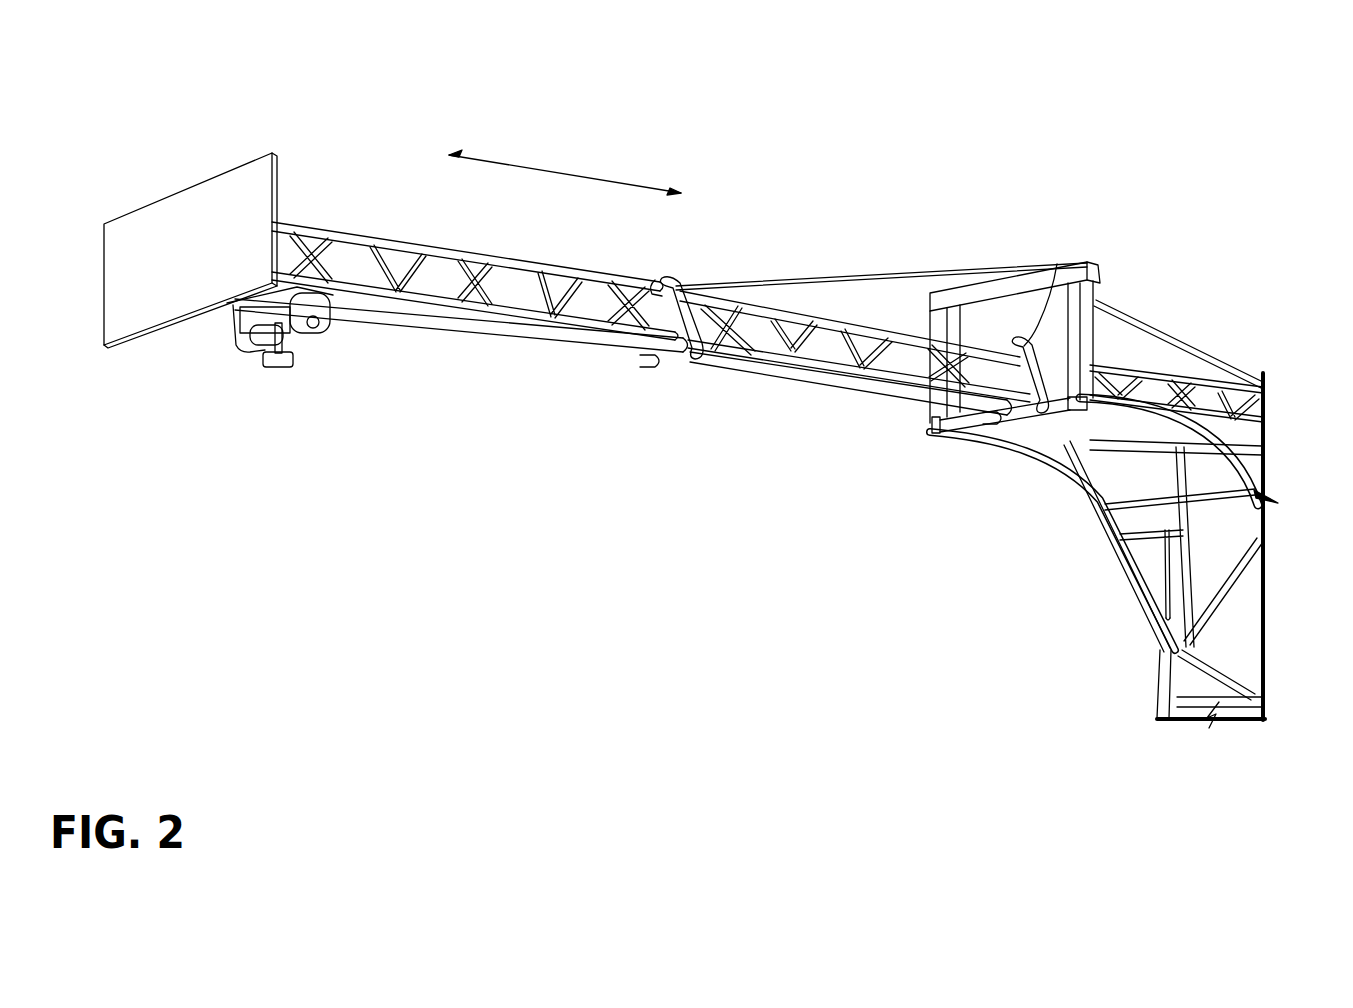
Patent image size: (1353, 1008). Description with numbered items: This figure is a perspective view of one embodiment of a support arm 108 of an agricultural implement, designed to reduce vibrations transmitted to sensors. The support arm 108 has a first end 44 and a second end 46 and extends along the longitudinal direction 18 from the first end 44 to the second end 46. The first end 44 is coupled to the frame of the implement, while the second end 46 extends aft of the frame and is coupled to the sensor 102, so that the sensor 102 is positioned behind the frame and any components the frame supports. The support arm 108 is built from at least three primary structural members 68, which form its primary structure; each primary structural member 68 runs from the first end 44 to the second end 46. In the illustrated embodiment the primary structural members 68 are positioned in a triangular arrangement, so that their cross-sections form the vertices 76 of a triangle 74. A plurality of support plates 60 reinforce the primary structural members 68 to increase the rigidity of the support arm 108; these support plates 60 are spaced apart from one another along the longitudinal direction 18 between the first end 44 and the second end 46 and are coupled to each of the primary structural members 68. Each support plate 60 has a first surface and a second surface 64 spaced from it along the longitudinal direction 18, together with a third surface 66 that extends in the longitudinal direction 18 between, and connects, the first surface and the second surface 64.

The longitudinal direction 18 is at (533, 168).
The first end 44 is at (1217, 297).
The second end 46 is at (351, 166).
The support plate 60 is at (653, 272).
The second surface 64 is at (626, 409).
The third surface 66 is at (682, 285).
The primary structural member 68 is at (477, 258).
The triangle 74 is at (657, 352).
The vertices 76 is at (672, 282).
The sensor 102 is at (296, 355).
The support arm 108 is at (864, 165).